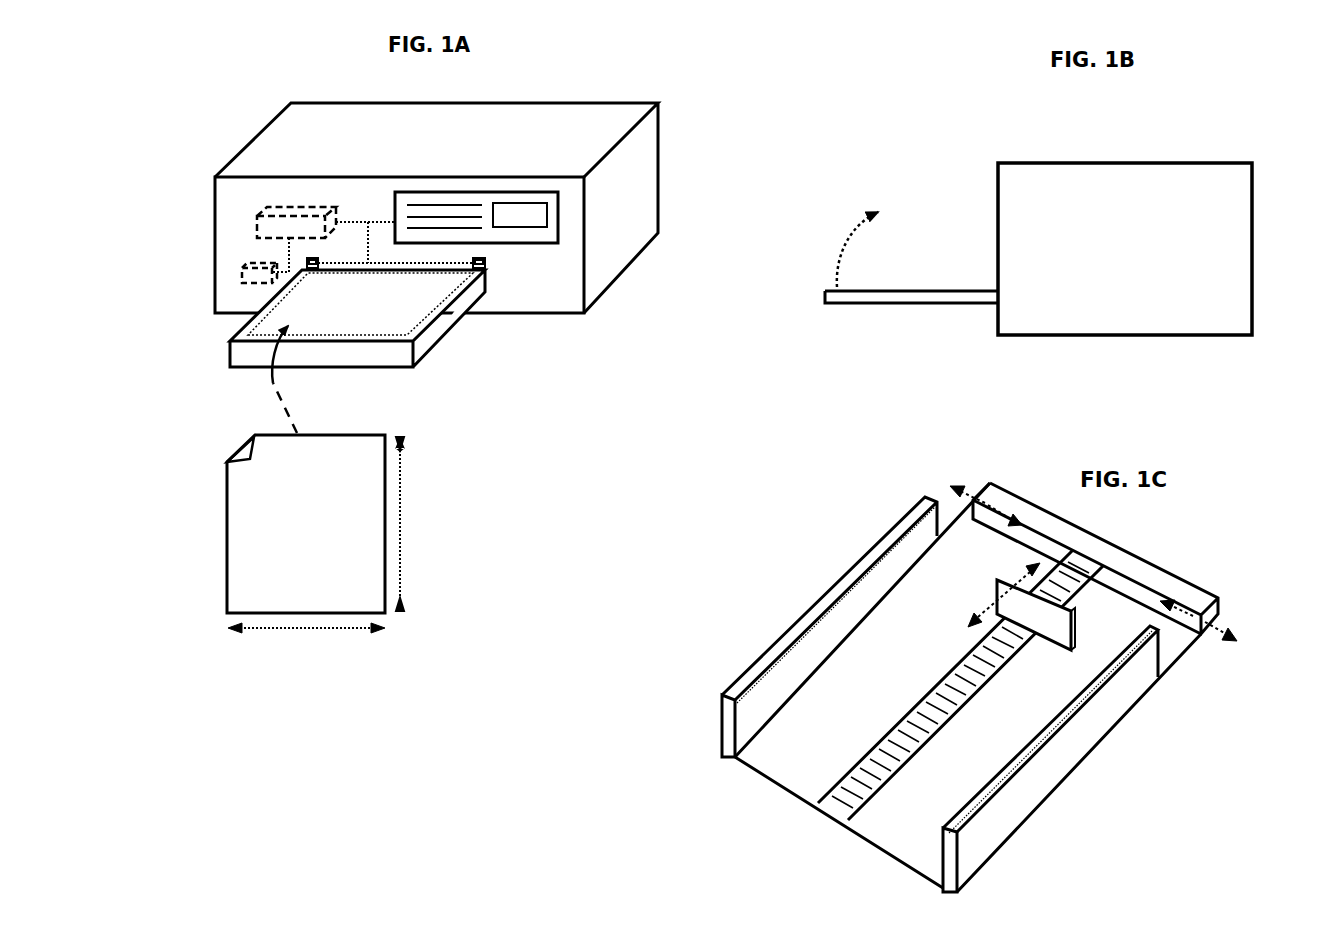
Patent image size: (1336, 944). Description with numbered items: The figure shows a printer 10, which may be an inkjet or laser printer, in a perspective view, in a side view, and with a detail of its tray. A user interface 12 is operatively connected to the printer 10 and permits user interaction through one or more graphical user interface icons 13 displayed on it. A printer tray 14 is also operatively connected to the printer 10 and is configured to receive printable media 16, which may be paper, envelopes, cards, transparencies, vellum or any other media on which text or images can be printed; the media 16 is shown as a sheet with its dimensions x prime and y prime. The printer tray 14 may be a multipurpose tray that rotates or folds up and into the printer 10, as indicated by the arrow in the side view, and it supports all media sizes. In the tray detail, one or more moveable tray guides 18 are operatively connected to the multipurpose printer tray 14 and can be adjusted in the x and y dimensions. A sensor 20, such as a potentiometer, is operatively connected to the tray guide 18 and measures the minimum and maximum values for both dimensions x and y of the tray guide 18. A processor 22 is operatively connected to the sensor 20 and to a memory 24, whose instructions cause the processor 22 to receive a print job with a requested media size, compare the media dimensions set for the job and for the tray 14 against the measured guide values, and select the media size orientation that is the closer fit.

In FIG. 1A, the printer 10 is at (660, 168).
In FIG. 1B, the printer 10 is at (1096, 163).
In FIG. 1A, the user interface 12 is at (558, 223).
In FIG. 1A, the graphical user interface (GUI) icons 13 is at (547, 208).
In FIG. 1A, the printer tray 14 is at (230, 352).
In FIG. 1B, the printer tray 14 is at (895, 303).
In FIG. 1C, the printer tray 14 is at (827, 517).
In FIG. 1A, the printable media 16 is at (327, 479).
In FIG. 1C, the moveable tray guide 18 is at (988, 482).
In FIG. 1A, the sensor 20 is at (305, 270).
In FIG. 1A, the processor 22 is at (258, 225).
In FIG. 1A, the memory 24 is at (242, 272).